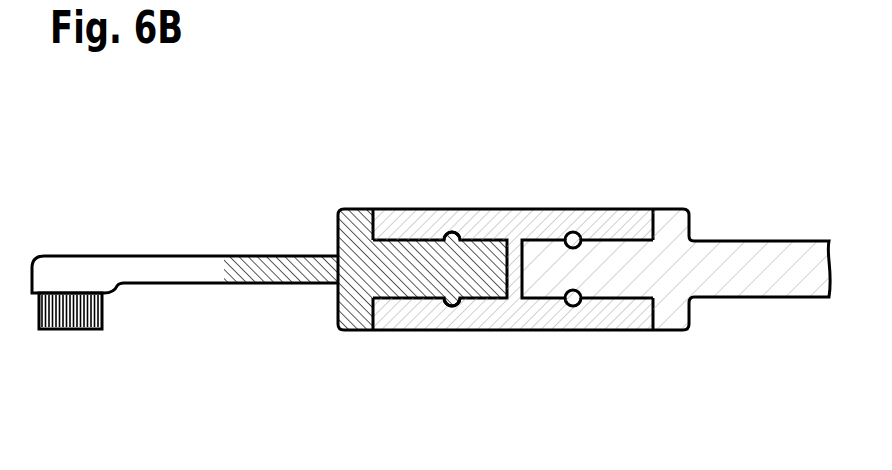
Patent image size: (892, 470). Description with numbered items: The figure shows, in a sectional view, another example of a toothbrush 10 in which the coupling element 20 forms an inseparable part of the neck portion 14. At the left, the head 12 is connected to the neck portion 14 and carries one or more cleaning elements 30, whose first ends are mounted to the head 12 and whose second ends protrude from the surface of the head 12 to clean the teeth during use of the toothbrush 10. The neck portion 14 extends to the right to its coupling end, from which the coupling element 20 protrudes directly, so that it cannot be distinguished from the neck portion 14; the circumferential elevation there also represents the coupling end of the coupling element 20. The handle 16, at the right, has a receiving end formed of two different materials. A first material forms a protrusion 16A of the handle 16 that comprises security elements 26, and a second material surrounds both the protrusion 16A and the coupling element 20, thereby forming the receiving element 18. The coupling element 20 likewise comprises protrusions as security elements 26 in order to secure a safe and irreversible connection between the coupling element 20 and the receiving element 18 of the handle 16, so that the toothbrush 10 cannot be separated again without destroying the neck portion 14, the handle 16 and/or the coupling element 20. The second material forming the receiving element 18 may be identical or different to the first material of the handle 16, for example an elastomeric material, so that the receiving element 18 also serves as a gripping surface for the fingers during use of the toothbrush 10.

The toothbrush 10 is at (648, 168).
The head 12 is at (80, 275).
The neck portion 14 is at (312, 268).
The handle 16 is at (768, 263).
The protrusion 16A is at (610, 258).
The receiving element 18 is at (512, 211).
The coupling element 20 is at (432, 247).
The security elements 26 is at (450, 305).
The cleaning elements 30 is at (63, 330).